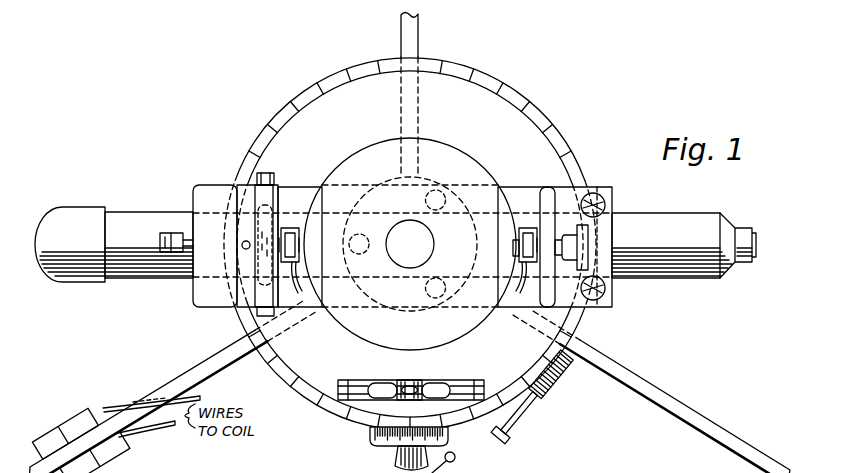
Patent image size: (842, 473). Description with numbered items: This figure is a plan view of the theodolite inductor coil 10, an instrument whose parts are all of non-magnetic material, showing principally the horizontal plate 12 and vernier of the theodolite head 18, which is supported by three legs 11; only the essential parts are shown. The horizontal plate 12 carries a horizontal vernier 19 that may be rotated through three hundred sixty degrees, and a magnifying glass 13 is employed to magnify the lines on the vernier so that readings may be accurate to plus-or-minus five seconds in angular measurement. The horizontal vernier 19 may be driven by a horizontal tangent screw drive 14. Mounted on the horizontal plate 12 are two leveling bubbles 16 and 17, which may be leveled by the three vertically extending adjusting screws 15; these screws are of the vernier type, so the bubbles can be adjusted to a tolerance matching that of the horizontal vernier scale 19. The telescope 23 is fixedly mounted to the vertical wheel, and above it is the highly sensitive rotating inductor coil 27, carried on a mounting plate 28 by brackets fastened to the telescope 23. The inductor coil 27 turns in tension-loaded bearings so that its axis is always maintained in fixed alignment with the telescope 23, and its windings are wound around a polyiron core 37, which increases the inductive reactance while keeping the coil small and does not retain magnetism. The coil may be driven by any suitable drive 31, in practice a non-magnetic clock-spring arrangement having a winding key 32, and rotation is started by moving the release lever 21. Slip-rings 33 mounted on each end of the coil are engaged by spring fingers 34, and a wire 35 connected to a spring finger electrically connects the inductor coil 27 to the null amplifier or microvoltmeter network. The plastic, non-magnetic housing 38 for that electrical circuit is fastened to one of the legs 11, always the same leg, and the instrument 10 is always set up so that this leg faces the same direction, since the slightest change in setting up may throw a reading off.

The theodolite inductor coil 10 is at (612, 159).
The legs 11 is at (420, 32).
The horizontal plate 12 is at (314, 380).
The magnifying glass 13 is at (398, 455).
The horizontal tangent screw drive 14 is at (527, 413).
The adjusting screws 15 is at (349, 245).
The leveling bubble 16 is at (470, 380).
The leveling bubble 17 is at (272, 175).
The theodolite head 18 is at (388, 177).
The horizontal vernier 19 is at (371, 433).
The release lever 21 is at (242, 246).
The telescope 23 is at (680, 213).
The inductor coil 27 is at (487, 170).
The mounting plate 28 is at (614, 306).
The drive 31 is at (207, 185).
The winding key 32 is at (163, 232).
The slip-rings 33 is at (291, 228).
The spring fingers 34 is at (205, 397).
The wire 35 is at (150, 432).
The polyiron core 37 is at (422, 246).
The housing 38 is at (70, 425).